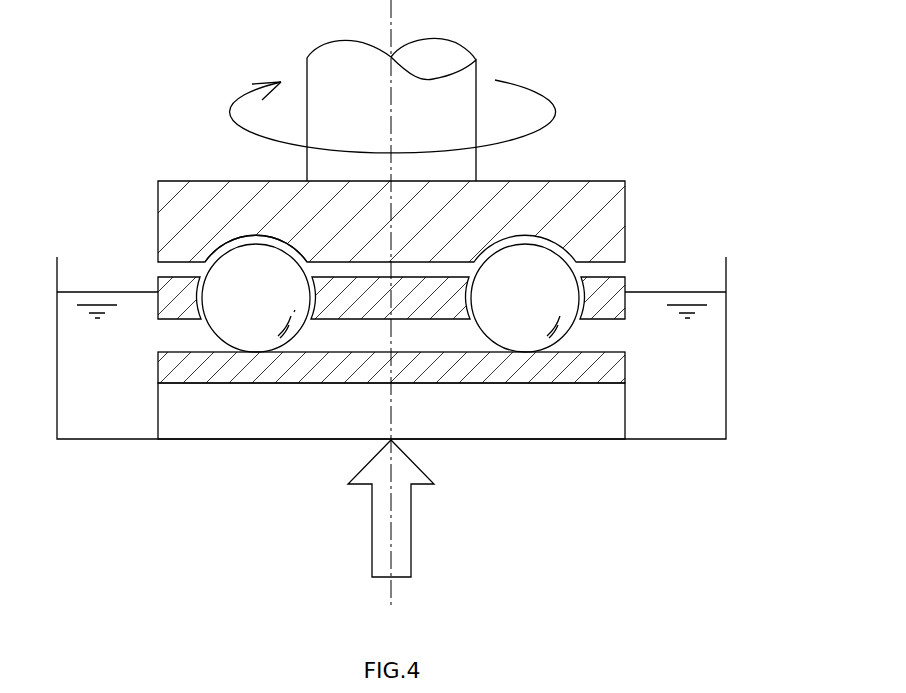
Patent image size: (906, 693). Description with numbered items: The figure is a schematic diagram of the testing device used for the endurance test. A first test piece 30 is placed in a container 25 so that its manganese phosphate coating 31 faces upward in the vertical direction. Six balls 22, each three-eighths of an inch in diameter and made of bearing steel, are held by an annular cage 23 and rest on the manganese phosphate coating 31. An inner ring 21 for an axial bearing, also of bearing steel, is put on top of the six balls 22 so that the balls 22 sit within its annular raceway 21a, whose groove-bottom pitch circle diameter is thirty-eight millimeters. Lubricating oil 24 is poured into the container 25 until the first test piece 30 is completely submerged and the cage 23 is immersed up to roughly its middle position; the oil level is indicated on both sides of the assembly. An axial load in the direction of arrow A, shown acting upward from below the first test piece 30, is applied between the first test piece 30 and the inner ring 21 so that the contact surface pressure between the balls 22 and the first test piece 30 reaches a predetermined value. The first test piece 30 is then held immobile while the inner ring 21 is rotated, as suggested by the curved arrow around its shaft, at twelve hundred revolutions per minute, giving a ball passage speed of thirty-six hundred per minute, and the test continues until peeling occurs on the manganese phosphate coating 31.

The inner ring 21 is at (157, 197).
The annular raceway 21a is at (231, 250).
The balls 22 is at (238, 323).
The annular cage 23 is at (158, 277).
The lubricating oil 24 is at (653, 310).
The container 25 is at (727, 440).
The first test piece 30 is at (300, 428).
The manganese phosphate coating 31 is at (180, 369).
The arrow A is at (411, 530).